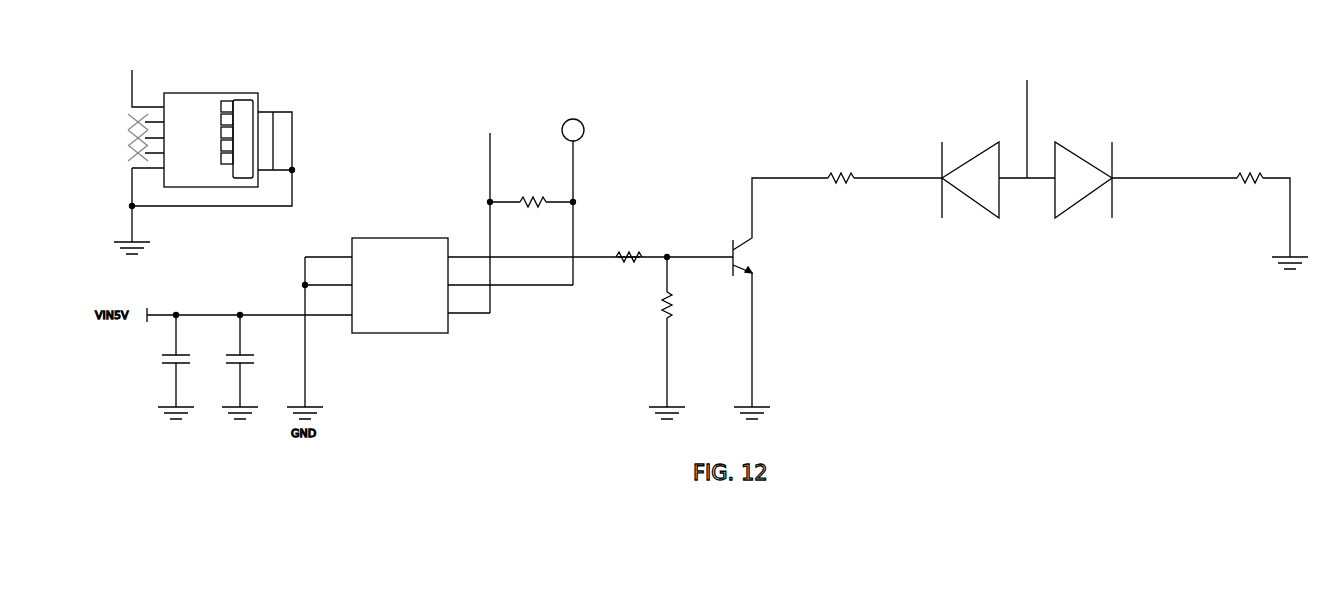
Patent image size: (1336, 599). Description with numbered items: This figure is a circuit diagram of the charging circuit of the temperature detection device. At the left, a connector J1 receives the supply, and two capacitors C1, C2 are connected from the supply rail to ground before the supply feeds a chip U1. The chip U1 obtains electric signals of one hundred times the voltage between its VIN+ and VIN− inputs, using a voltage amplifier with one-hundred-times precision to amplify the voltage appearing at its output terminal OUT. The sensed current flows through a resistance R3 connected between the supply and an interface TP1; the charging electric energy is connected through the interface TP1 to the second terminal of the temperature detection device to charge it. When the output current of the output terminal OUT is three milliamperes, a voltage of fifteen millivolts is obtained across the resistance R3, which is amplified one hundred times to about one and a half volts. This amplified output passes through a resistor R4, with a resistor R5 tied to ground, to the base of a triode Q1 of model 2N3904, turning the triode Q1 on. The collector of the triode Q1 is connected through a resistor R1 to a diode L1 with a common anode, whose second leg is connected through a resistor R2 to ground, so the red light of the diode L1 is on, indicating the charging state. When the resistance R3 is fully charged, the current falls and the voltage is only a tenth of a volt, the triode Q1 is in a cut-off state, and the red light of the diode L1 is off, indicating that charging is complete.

The USB connector J1 is at (201, 166).
The capacitor 10uF C1 is at (187, 377).
The capacitor 0.1uF C2 is at (253, 377).
The chip U1 is at (519, 274).
The resistance R3 is at (522, 217).
The interface TP1 is at (681, 190).
The resistor 10K R4 is at (637, 265).
The resistor 100K R5 is at (680, 348).
The triode Q1 is at (765, 309).
The resistor 1K R1 is at (868, 180).
The diode with common anode L1 is at (1056, 171).
The resistor 1K R2 is at (1263, 221).